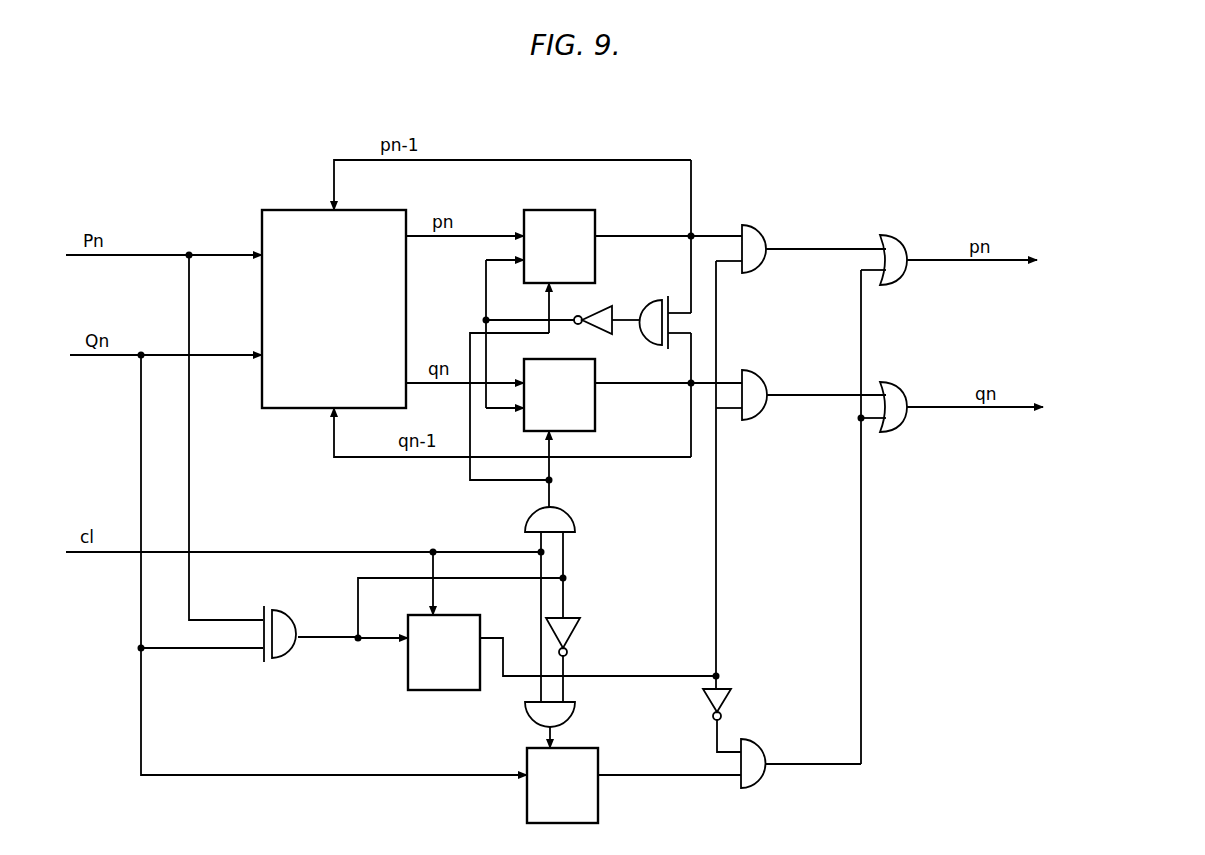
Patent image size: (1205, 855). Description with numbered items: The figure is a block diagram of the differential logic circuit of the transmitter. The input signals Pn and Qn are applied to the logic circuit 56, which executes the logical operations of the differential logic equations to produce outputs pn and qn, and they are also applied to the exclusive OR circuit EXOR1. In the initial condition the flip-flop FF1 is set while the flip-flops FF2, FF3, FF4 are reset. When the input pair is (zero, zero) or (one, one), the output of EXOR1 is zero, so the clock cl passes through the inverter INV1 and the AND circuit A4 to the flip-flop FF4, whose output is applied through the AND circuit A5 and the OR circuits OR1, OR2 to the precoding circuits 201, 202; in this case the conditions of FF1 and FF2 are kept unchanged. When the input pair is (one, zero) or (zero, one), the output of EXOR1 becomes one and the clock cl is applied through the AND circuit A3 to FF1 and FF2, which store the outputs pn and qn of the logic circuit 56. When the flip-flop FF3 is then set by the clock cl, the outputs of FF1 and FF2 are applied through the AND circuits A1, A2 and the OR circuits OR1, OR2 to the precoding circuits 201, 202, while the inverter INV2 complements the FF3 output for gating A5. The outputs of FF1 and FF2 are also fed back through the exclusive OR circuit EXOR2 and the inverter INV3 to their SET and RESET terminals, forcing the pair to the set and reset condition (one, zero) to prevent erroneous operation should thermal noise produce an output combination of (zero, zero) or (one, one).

The logic circuit 56 is at (293, 210).
The precoding circuit 201 is at (1110, 266).
The precoding circuit 202 is at (1118, 412).
The flip-flop FF1 is at (547, 256).
The flip-flop FF2 is at (540, 405).
The flip-flop FF3 is at (441, 643).
The flip-flop FF4 is at (559, 777).
The AND circuit A1 is at (801, 236).
The AND circuit A2 is at (801, 383).
The AND circuit A3 is at (563, 519).
The AND circuit A4 is at (567, 722).
The AND circuit A5 is at (729, 769).
The OR circuit OR1 is at (949, 254).
The OR circuit OR2 is at (952, 400).
The inverter INV1 is at (581, 660).
The inverter INV2 is at (739, 720).
The inverter INV3 is at (594, 314).
The exclusive OR circuit EXOR1 is at (311, 647).
The exclusive OR circuit EXOR2 is at (640, 343).